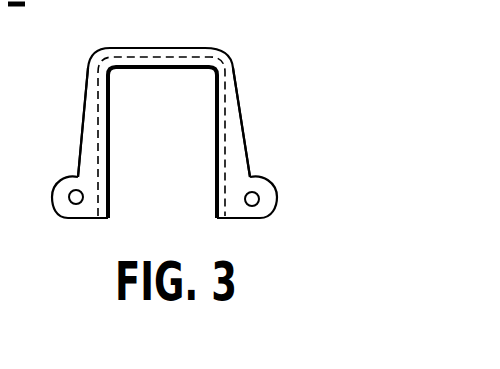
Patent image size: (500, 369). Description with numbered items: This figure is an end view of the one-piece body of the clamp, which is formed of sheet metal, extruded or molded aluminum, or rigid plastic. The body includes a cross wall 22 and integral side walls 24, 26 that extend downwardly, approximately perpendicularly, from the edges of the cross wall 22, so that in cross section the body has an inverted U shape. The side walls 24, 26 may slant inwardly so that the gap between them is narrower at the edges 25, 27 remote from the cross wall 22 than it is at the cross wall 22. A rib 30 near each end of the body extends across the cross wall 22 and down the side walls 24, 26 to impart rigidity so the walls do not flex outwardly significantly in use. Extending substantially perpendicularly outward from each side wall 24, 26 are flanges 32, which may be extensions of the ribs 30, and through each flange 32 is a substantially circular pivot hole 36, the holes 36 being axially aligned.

The cross wall 22 is at (164, 48).
The side wall 24 is at (84, 120).
The edge of side wall 25 is at (98, 220).
The side wall 26 is at (228, 100).
The edge of side wall 27 is at (220, 220).
The rib 30 is at (243, 133).
The flange 32 is at (72, 178).
The pivot hole 36 is at (70, 198).